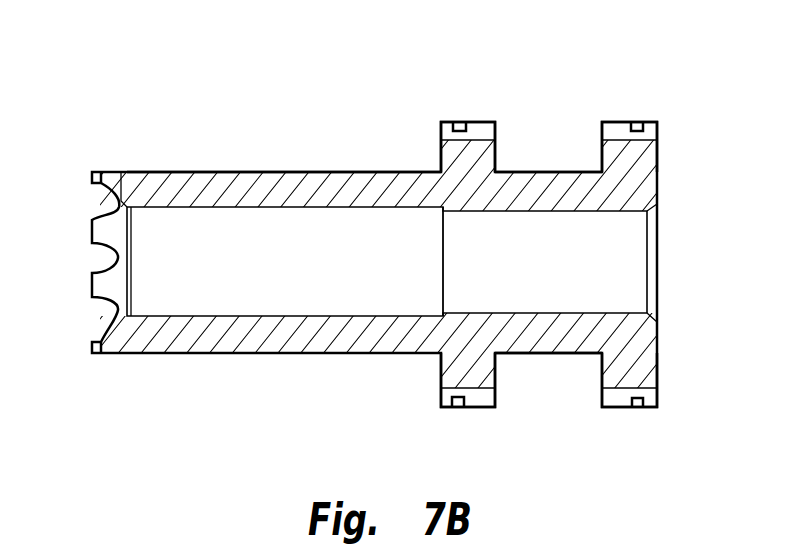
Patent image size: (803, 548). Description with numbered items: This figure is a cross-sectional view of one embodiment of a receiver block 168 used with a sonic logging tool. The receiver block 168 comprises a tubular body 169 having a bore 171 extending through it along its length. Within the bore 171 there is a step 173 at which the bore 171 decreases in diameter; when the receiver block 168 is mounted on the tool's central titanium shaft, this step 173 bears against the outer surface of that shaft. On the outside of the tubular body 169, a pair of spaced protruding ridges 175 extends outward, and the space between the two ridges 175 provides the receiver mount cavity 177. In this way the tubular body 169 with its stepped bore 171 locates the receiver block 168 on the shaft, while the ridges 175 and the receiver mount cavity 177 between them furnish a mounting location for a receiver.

The receiver block 168 is at (177, 117).
The tubular body 169 is at (327, 188).
The bore 171 is at (322, 277).
The step 173 is at (445, 213).
The spaced protruding ridges 175 is at (482, 138).
The receiver mount cavity 177 is at (548, 142).